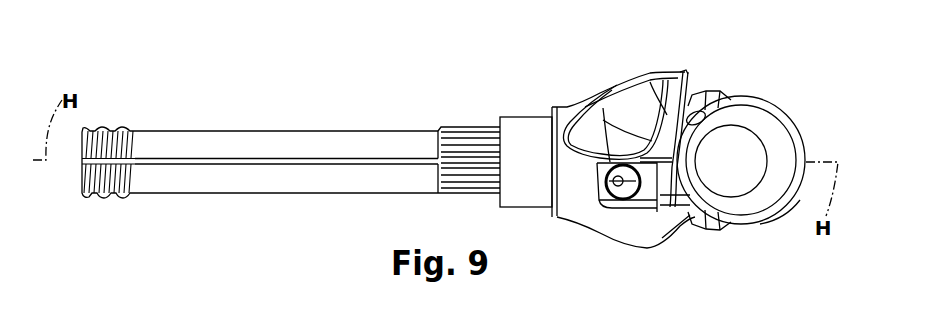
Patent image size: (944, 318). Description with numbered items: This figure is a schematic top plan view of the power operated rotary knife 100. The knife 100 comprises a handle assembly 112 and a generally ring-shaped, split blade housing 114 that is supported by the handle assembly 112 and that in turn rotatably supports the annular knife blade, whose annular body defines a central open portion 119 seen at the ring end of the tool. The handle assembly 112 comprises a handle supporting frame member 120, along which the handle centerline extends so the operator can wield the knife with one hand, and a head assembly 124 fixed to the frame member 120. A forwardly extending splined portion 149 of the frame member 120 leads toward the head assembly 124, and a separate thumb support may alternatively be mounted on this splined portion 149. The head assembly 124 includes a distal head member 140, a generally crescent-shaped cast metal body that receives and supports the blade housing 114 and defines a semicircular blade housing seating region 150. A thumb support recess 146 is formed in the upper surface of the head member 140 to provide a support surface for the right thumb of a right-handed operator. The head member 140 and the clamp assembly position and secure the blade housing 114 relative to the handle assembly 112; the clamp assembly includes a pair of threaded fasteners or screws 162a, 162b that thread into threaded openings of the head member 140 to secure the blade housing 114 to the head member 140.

The power operated rotary knife 100 is at (370, 88).
The handle assembly 112 is at (417, 128).
The split blade housing 114 is at (773, 222).
The central open portion 119 is at (752, 175).
The handle supporting frame member 120 is at (298, 173).
The head assembly 124 is at (565, 103).
The head member 140 is at (665, 72).
The thumb support recess 146 is at (634, 107).
The splined portion 149 is at (527, 187).
The blade housing seating region 150 is at (679, 151).
The threaded fastener 162a is at (728, 135).
The threaded fastener 162b is at (725, 232).